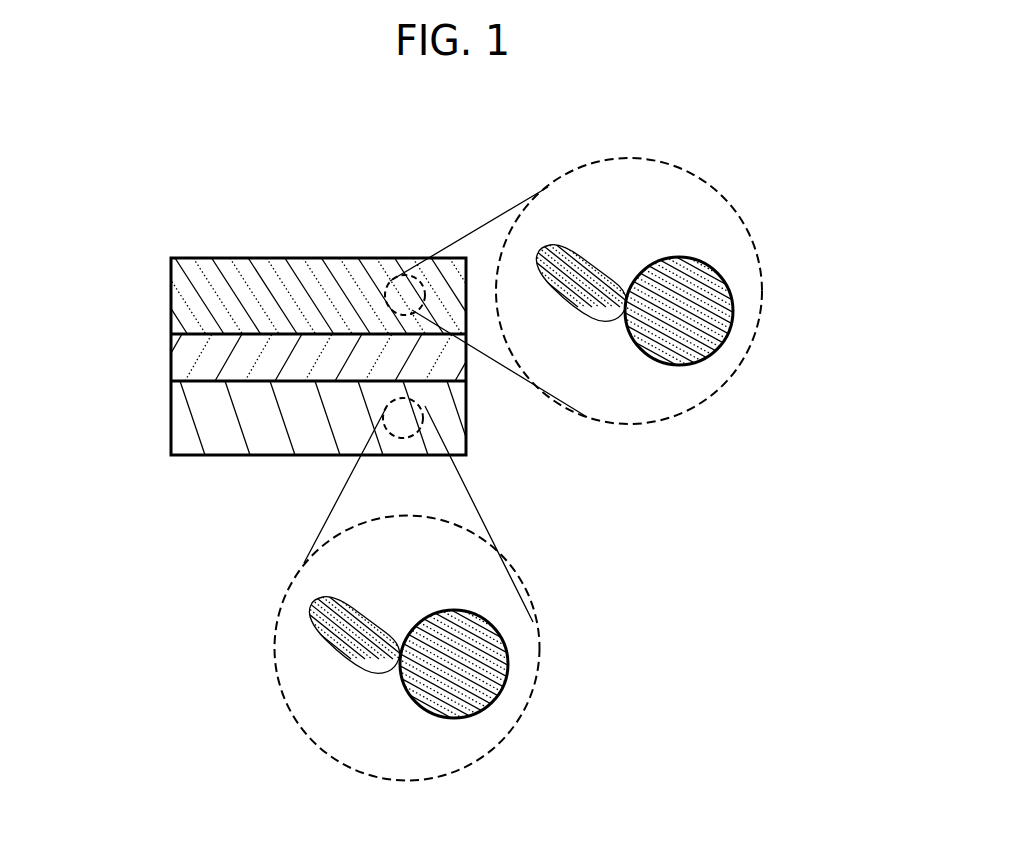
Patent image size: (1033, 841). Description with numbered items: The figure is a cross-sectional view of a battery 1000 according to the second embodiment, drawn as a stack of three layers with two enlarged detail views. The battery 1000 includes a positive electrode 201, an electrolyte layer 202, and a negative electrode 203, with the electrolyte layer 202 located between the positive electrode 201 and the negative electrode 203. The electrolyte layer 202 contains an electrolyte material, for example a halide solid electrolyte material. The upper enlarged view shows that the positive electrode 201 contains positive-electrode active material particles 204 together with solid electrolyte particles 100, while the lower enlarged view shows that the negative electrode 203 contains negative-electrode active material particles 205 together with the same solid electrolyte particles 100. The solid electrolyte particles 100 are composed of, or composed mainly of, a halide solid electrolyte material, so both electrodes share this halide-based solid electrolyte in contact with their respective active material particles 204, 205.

The battery 1000 is at (360, 206).
The positive electrode 201 is at (188, 283).
The electrolyte layer 202 is at (187, 358).
The negative electrode 203 is at (190, 420).
The solid electrolyte particles 100 is at (597, 307).
The positive-electrode active material particles 204 is at (712, 318).
The negative-electrode active material particles 205 is at (488, 662).